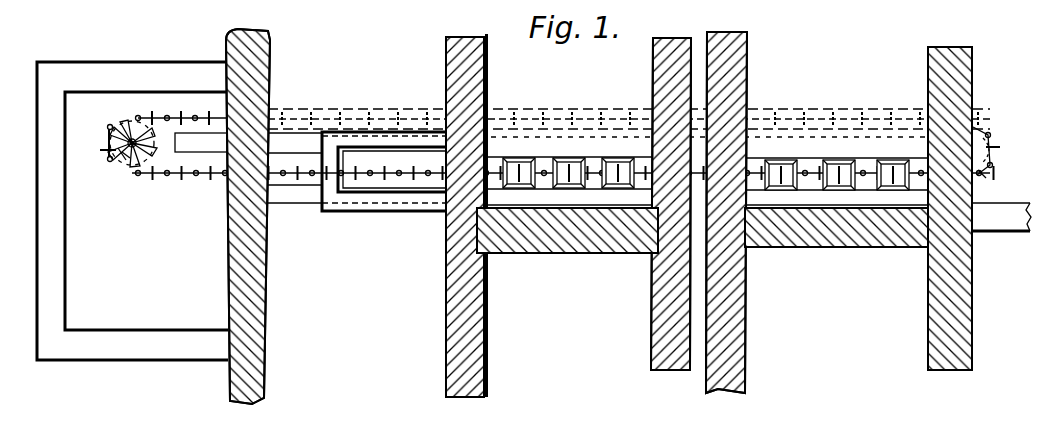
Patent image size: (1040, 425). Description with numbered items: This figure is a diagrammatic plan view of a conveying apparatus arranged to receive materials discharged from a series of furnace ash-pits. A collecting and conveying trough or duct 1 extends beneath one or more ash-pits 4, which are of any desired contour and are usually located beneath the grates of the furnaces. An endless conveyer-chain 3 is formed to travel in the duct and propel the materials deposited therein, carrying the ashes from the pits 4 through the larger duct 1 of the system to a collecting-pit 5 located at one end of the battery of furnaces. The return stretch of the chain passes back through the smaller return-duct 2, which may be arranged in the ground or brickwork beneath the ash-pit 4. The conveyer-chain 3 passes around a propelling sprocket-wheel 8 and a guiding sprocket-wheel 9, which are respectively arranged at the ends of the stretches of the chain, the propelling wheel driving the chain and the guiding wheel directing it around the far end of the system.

The collecting and conveying trough or duct 1 is at (518, 163).
The return-duct 2 is at (371, 109).
The conveyer-chain 3 is at (563, 183).
The ash-pit 4 is at (563, 105).
The collecting-pit 5 is at (132, 211).
The propelling sprocket-wheel 8 is at (125, 165).
The guiding sprocket-wheel 9 is at (986, 139).